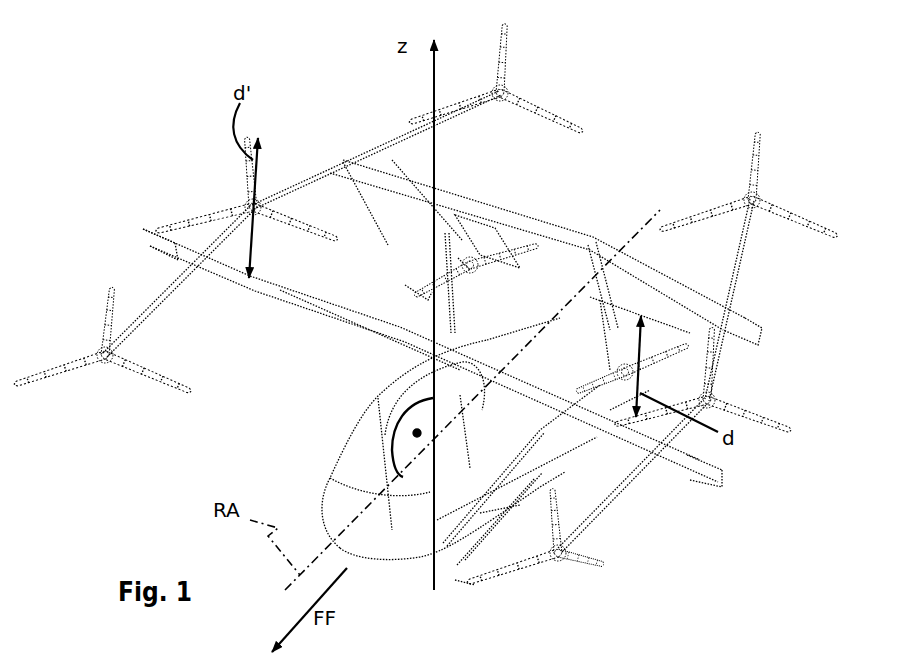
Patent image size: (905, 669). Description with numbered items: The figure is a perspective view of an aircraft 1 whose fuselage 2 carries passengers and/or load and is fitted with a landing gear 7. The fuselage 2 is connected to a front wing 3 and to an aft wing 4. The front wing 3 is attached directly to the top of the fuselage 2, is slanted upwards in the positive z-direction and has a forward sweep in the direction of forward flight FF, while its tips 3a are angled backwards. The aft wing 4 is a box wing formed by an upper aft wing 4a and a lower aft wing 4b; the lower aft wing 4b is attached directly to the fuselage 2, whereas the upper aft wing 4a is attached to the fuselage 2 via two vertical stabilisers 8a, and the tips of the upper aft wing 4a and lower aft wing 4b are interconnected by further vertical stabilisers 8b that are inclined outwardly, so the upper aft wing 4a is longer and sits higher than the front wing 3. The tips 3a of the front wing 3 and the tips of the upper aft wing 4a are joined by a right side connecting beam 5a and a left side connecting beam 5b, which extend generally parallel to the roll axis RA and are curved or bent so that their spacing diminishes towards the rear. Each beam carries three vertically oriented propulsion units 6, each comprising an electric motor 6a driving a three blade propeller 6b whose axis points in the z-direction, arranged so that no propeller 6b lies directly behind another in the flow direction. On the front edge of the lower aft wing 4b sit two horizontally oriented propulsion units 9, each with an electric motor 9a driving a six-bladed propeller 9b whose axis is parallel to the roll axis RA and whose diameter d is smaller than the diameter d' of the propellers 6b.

The aircraft 1 is at (607, 147).
The fuselage 2 is at (370, 430).
The front wing 3 is at (340, 330).
The tips of front wing 3a is at (160, 250).
The aft wing 4 is at (526, 206).
The upper aft wing 4a is at (469, 220).
The lower aft wing 4b is at (622, 313).
The right side connecting beam 5a is at (297, 197).
The left side connecting beam 5b is at (613, 505).
The vertically oriented propulsion unit 6 is at (221, 178).
The electric motor 6a is at (107, 372).
The three blade propeller 6b is at (67, 373).
The landing gear 7 is at (503, 520).
The vertical stabiliser 8a is at (590, 290).
The further vertical stabiliser 8b is at (377, 210).
The horizontally oriented propulsion unit 9 is at (414, 320).
The electric motor 9a is at (420, 290).
The propeller 9b is at (463, 263).